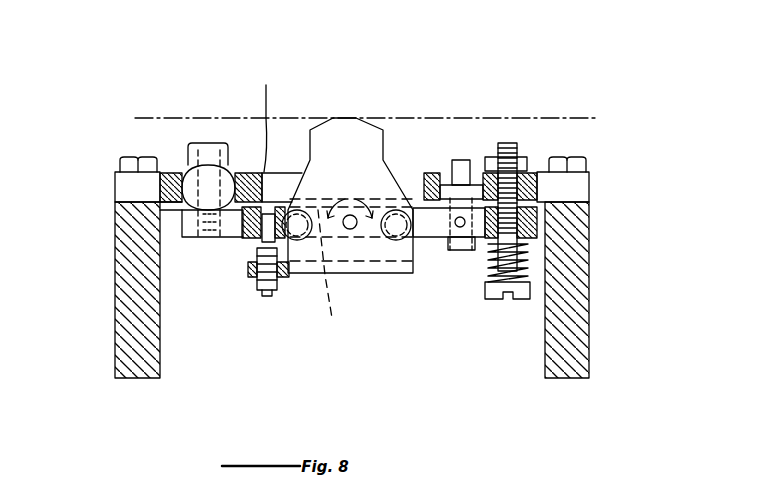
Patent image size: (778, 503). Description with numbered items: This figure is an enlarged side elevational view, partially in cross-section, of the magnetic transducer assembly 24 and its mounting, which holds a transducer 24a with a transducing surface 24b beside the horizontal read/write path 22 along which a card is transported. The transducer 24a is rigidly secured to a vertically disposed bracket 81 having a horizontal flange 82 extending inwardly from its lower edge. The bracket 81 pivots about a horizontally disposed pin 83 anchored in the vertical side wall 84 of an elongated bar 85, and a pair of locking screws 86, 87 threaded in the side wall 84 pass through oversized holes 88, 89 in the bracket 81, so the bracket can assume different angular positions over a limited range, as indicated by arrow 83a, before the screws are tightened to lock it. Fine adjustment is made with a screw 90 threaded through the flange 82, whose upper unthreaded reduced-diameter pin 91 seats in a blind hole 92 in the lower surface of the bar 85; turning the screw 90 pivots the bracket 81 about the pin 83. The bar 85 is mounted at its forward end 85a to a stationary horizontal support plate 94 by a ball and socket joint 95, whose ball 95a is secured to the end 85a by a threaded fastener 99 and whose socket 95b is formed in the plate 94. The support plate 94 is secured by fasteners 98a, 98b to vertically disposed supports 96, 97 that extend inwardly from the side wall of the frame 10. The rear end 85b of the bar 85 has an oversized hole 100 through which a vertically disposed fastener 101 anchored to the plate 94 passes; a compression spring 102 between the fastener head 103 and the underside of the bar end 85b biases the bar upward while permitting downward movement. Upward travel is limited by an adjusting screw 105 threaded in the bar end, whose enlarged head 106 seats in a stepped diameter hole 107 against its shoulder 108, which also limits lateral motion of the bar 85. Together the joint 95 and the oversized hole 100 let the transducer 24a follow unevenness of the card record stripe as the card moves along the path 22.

The frame 10 is at (575, 312).
The horizontal read/write path 22 is at (384, 116).
The magnetic transducer assembly 24 is at (286, 362).
The transducer 24a is at (340, 137).
The transducing surface 24b is at (346, 118).
The bracket 81 is at (375, 175).
The horizontal flange 82 is at (285, 274).
The pin 83 is at (348, 229).
The arrow 83a is at (350, 208).
The vertical side wall 84 is at (428, 240).
The bar 85 is at (183, 240).
The forward end 85a is at (185, 228).
The rear end 85b is at (540, 222).
The locking screw 86 is at (297, 210).
The locking screw 87 is at (398, 210).
The oversized hole 88 is at (350, 228).
The oversized hole 89 is at (396, 272).
The screw 90 is at (262, 284).
The reduced-diameter pin 91 is at (262, 238).
The blind hole 92 is at (270, 170).
The horizontal support plate 94 is at (269, 119).
The ball and socket joint 95 is at (238, 162).
The ball 95a is at (198, 167).
The socket 95b is at (160, 214).
The vertical support 96 is at (117, 323).
The vertical support 97 is at (590, 344).
The fastener 98a is at (120, 166).
The fastener 98b is at (588, 160).
The threaded fastener 99 is at (190, 153).
The oversized hole 100 is at (547, 245).
The fastener 101 is at (540, 182).
The compression spring 102 is at (515, 280).
The fastener head 103 is at (514, 300).
The adjusting screw 105 is at (464, 251).
The enlarged head 106 is at (456, 185).
The stepped diameter hole 107 is at (480, 180).
The shoulder 108 is at (490, 176).